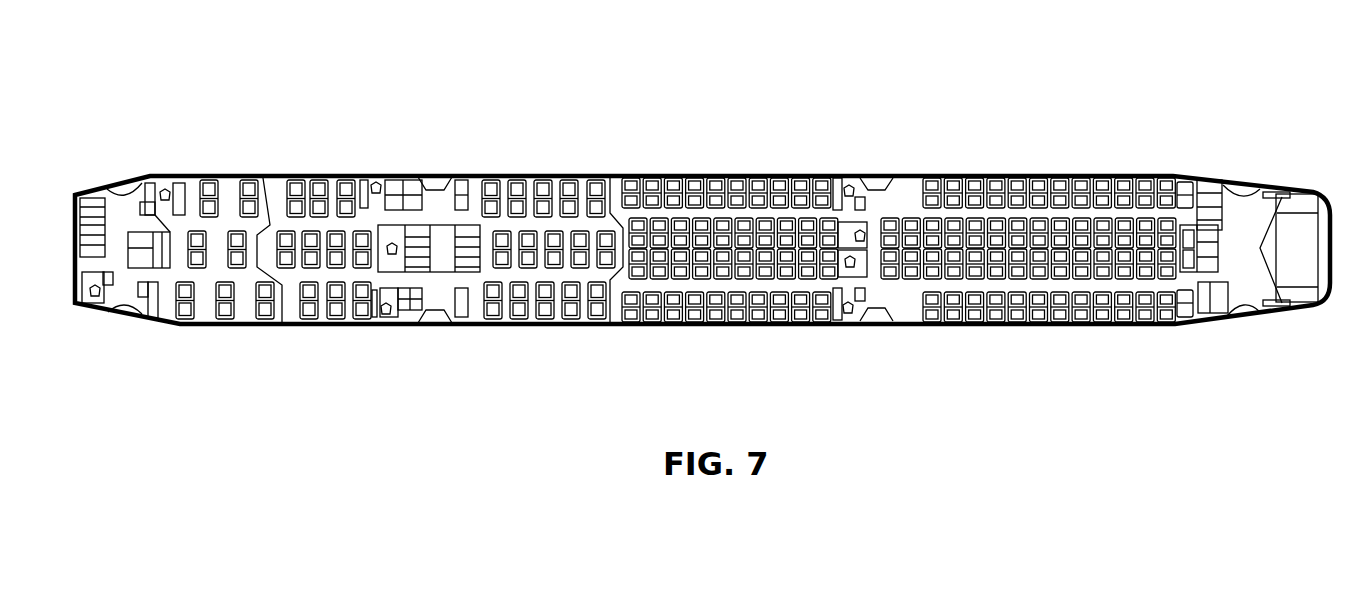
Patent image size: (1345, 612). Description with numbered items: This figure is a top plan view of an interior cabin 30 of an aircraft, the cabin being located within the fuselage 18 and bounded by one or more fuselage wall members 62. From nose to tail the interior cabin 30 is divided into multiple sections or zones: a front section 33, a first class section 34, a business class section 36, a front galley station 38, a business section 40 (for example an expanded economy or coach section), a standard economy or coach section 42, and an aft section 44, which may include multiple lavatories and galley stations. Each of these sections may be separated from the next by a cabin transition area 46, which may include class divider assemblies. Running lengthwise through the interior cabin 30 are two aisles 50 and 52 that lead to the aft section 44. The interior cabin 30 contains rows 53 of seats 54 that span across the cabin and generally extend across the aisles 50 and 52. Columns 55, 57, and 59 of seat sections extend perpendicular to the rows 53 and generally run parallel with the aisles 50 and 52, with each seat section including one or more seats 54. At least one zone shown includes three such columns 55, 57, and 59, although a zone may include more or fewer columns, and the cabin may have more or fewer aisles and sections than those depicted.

The interior cabin 30 is at (216, 78).
The fuselage 18 is at (557, 137).
The front section 33 is at (135, 337).
The first class section 34 is at (234, 330).
The business class section 36 is at (305, 170).
The front galley station 38 is at (435, 330).
The business section 40 is at (535, 330).
The standard economy or coach section 42 is at (682, 172).
The aft section 44 is at (1252, 180).
The cabin transition area 46 is at (150, 172).
The aisle 50 is at (1037, 215).
The aisle 52 is at (1055, 285).
The rows of seats 53 is at (640, 330).
The seat 54 is at (625, 303).
The column of seat sections 55 is at (615, 303).
The column of seat sections 57 is at (637, 223).
The column of seat sections 59 is at (625, 185).
The fuselage wall member 62 is at (502, 173).